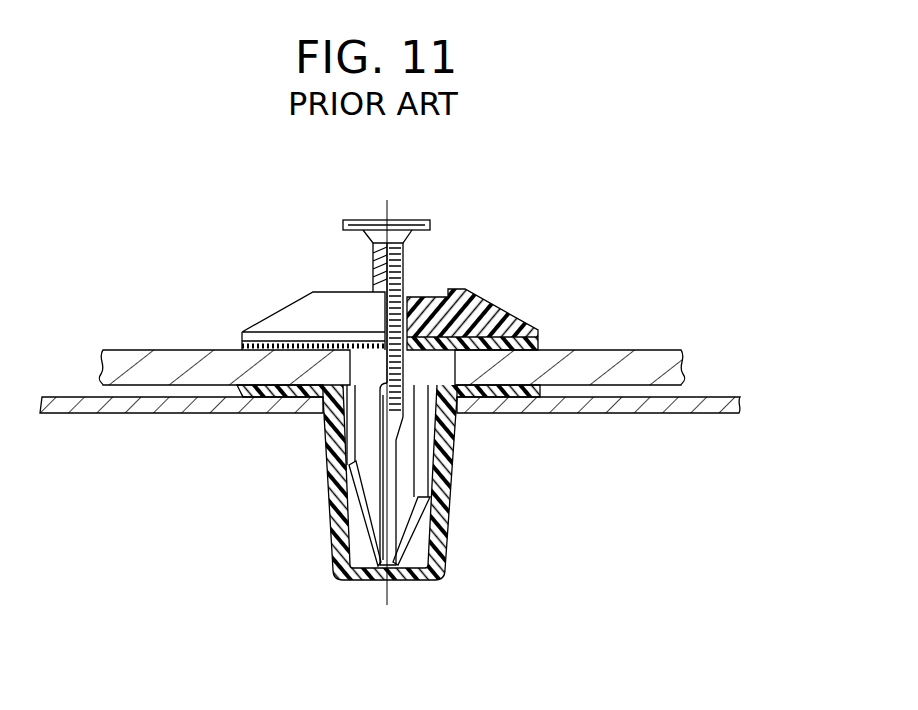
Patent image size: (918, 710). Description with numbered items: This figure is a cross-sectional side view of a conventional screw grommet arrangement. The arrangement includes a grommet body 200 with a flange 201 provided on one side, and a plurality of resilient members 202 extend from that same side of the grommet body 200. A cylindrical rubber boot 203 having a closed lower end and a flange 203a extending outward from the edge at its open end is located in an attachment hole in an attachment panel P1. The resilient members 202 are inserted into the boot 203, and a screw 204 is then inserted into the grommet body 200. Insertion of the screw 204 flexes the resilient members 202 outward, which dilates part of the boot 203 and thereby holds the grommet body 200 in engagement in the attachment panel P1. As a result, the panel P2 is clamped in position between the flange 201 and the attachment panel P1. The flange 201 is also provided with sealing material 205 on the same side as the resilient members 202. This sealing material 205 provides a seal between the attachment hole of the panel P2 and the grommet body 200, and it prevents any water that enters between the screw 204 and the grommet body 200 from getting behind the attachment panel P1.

The grommet body 200 is at (503, 305).
The flange 201 is at (530, 322).
The resilient members 202 is at (363, 448).
The cylindrical rubber boot 203 is at (450, 537).
The flange of boot 203a is at (523, 388).
The screw 204 is at (402, 260).
The sealing material 205 is at (240, 348).
The attachment panel P1 is at (703, 413).
The panel P2 is at (667, 350).